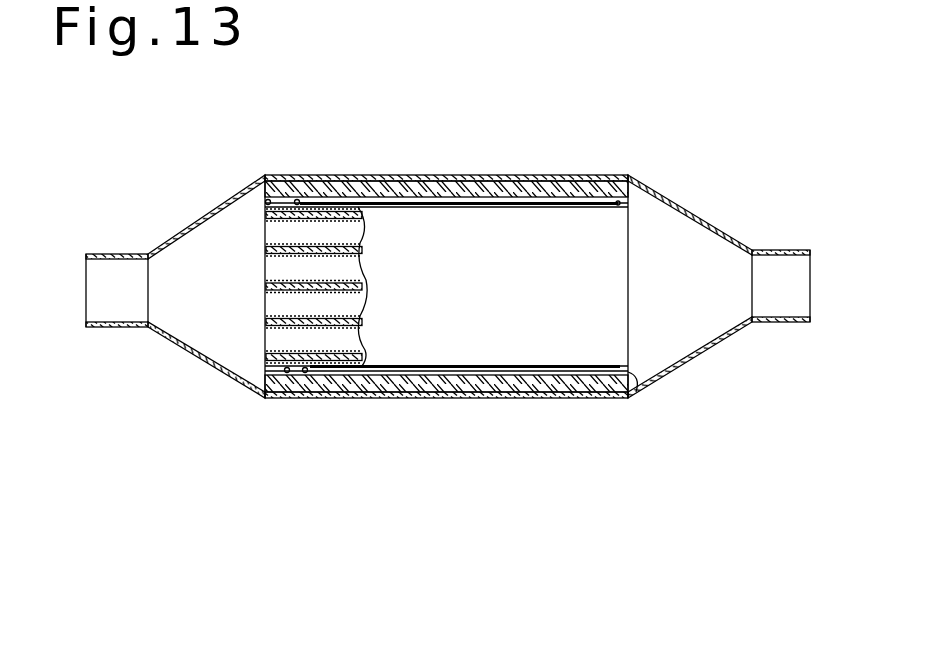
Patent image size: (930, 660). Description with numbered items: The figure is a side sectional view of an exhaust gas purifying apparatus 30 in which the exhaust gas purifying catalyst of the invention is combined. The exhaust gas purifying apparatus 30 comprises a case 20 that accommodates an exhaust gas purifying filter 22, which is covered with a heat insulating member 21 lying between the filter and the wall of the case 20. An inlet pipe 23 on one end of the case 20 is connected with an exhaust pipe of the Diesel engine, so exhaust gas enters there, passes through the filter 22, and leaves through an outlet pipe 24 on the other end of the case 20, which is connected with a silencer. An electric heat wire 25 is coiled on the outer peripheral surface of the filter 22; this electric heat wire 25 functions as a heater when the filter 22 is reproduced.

The case 20 is at (512, 176).
The heat insulating member 21 is at (573, 195).
The exhaust gas purifying filter 22 is at (477, 295).
The inlet pipe 23 is at (106, 294).
The outlet pipe 24 is at (782, 275).
The electric heat wire 25 is at (640, 386).
The exhaust gas purifying apparatus 30 is at (255, 171).